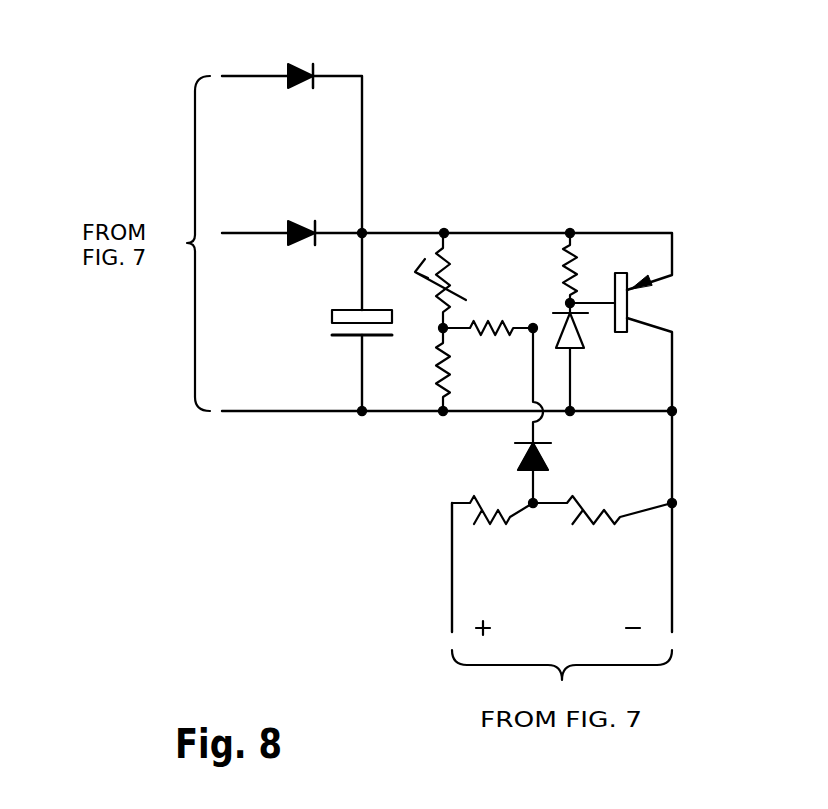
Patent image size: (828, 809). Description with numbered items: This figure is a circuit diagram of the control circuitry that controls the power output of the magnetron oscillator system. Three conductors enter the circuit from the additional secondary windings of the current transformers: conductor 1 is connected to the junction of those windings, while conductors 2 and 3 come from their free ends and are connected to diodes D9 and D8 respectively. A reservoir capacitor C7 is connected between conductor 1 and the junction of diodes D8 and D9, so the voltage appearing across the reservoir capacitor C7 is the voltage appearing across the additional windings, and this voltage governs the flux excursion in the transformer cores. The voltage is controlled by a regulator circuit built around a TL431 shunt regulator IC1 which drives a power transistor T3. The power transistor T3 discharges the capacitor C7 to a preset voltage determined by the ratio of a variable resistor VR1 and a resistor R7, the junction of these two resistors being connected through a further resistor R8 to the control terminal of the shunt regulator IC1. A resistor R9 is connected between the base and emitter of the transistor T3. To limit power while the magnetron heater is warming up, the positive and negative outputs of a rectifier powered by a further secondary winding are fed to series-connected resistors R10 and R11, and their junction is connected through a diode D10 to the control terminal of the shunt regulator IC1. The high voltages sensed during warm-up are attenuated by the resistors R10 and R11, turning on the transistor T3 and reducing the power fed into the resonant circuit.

The conductor 1 is at (268, 411).
The conductor 2 is at (249, 233).
The conductor 3 is at (242, 76).
The diode D8 is at (296, 49).
The diode D9 is at (311, 209).
The reservoir capacitor C7 is at (349, 342).
The variable resistor VR1 is at (461, 283).
The resistor R7 is at (424, 369).
The further resistor R8 is at (490, 345).
The resistor R9 is at (568, 270).
The shunt regulator IC1 is at (588, 357).
The power transistor T3 is at (658, 302).
The diode D10 is at (501, 420).
The resistor R10 is at (492, 523).
The resistor R11 is at (602, 523).